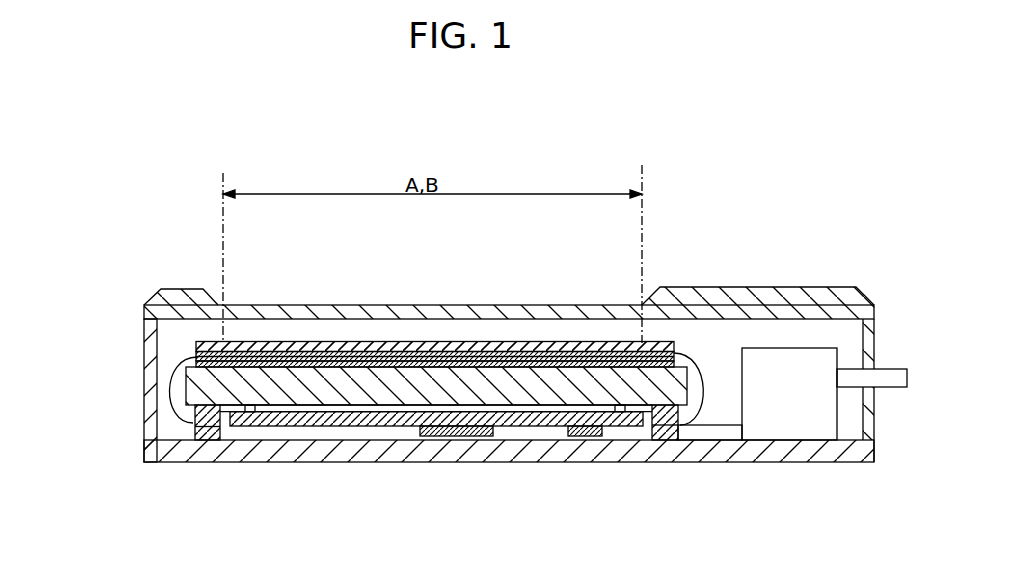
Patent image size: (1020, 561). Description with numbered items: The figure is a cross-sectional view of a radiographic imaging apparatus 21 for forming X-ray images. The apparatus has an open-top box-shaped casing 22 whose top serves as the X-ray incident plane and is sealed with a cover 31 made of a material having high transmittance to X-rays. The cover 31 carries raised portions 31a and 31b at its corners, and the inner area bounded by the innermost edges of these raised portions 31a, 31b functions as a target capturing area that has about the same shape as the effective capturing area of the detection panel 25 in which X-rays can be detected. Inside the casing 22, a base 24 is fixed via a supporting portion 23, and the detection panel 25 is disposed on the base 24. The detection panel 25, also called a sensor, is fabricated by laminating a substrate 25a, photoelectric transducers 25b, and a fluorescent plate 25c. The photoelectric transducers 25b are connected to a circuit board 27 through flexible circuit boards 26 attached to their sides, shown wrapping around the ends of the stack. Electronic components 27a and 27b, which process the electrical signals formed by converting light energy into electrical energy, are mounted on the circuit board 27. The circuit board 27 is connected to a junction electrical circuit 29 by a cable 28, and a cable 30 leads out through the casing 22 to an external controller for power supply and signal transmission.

The radiographic imaging apparatus 21 is at (541, 297).
The casing 22 is at (148, 371).
The supporting portion 23 is at (212, 440).
The base 24 is at (360, 400).
The detection panel 25 is at (455, 257).
The substrate 25a is at (438, 361).
The photoelectric transducers 25b is at (380, 351).
The fluorescent plate 25c is at (322, 341).
The flexible circuit boards 26 is at (181, 428).
The circuit board 27 is at (304, 427).
The electronic component 27a is at (455, 436).
The electronic component 27b is at (583, 436).
The cable 28 is at (715, 430).
The junction electrical circuit 29 is at (797, 420).
The cable 30 is at (895, 388).
The cover 31 is at (247, 305).
The raised portion 31a is at (181, 298).
The raised portion 31b is at (757, 297).